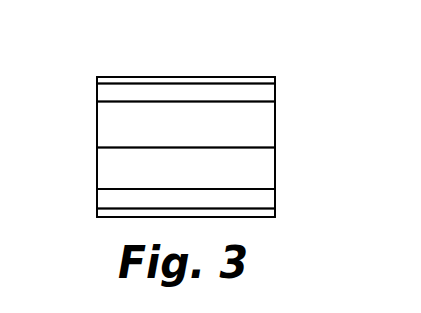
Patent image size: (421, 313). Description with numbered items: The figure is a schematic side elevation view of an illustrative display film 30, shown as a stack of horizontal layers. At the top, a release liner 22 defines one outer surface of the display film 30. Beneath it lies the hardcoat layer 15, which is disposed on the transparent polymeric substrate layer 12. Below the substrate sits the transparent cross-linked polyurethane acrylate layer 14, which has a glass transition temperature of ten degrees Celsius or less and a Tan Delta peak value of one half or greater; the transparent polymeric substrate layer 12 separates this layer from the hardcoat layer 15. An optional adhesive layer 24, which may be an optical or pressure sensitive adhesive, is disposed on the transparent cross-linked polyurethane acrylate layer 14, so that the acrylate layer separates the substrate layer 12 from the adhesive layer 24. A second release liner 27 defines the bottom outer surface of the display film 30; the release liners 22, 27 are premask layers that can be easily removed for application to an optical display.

The display film 30 is at (283, 55).
The release liner 22 is at (180, 78).
The hardcoat layer 15 is at (108, 94).
The transparent polymeric substrate layer 12 is at (198, 134).
The transparent cross-linked polyurethane acrylate layer 14 is at (198, 180).
The adhesive layer 24 is at (108, 200).
The release liner 27 is at (268, 211).